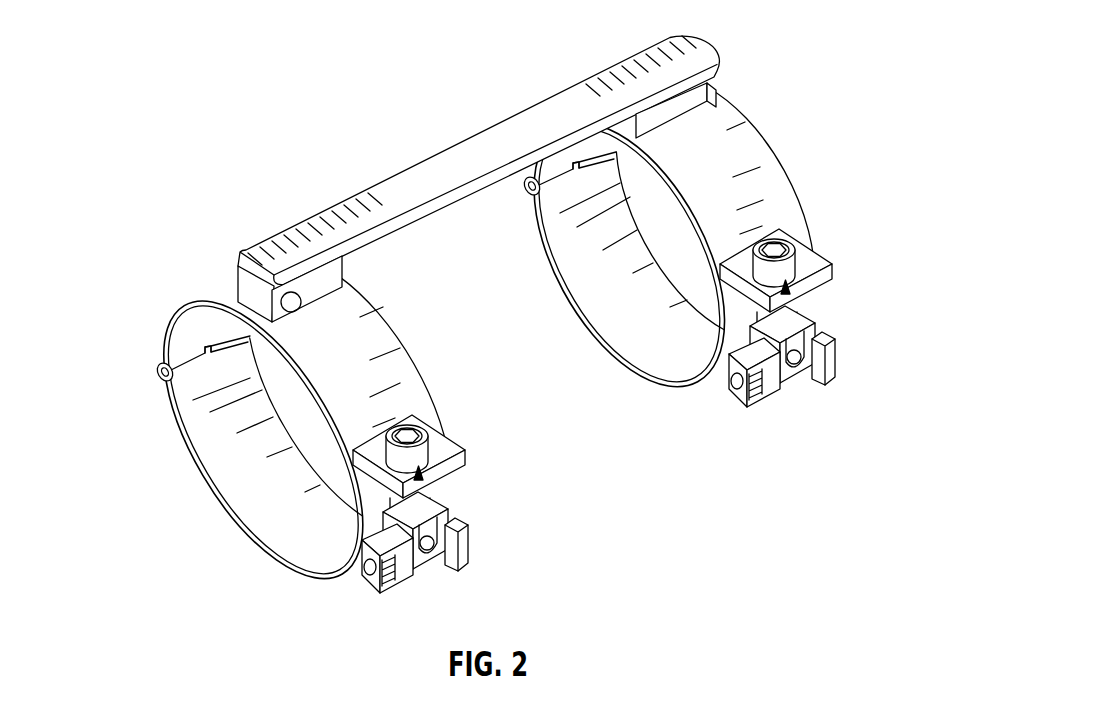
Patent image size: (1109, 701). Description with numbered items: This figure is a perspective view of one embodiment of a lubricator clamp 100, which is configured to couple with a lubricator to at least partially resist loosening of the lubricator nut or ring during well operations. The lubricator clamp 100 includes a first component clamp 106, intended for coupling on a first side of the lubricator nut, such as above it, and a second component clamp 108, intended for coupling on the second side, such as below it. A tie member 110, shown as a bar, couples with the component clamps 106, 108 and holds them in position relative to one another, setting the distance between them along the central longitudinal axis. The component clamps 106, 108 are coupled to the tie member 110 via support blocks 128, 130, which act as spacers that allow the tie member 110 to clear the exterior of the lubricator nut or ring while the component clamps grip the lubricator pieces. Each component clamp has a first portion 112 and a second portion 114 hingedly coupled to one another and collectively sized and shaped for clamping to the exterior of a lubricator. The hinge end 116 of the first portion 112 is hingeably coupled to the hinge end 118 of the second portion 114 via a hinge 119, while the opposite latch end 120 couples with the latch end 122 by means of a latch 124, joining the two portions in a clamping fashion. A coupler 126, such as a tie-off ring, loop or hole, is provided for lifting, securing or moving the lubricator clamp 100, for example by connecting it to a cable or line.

The lubricator clamp 100 is at (692, 25).
The first component clamp 106 is at (386, 296).
The second component clamp 108 is at (800, 143).
The tie member 110 is at (455, 146).
The first portion 112 is at (430, 386).
The second portion 114 is at (246, 536).
The hinge end 116 is at (167, 358).
The hinge end 118 is at (176, 424).
The hinge 119 is at (160, 378).
The latch end 120 is at (434, 414).
The latch end 122 is at (348, 575).
The latch 124 is at (477, 433).
The coupler 126 is at (247, 290).
The support block 128 is at (343, 283).
The support block 130 is at (712, 88).